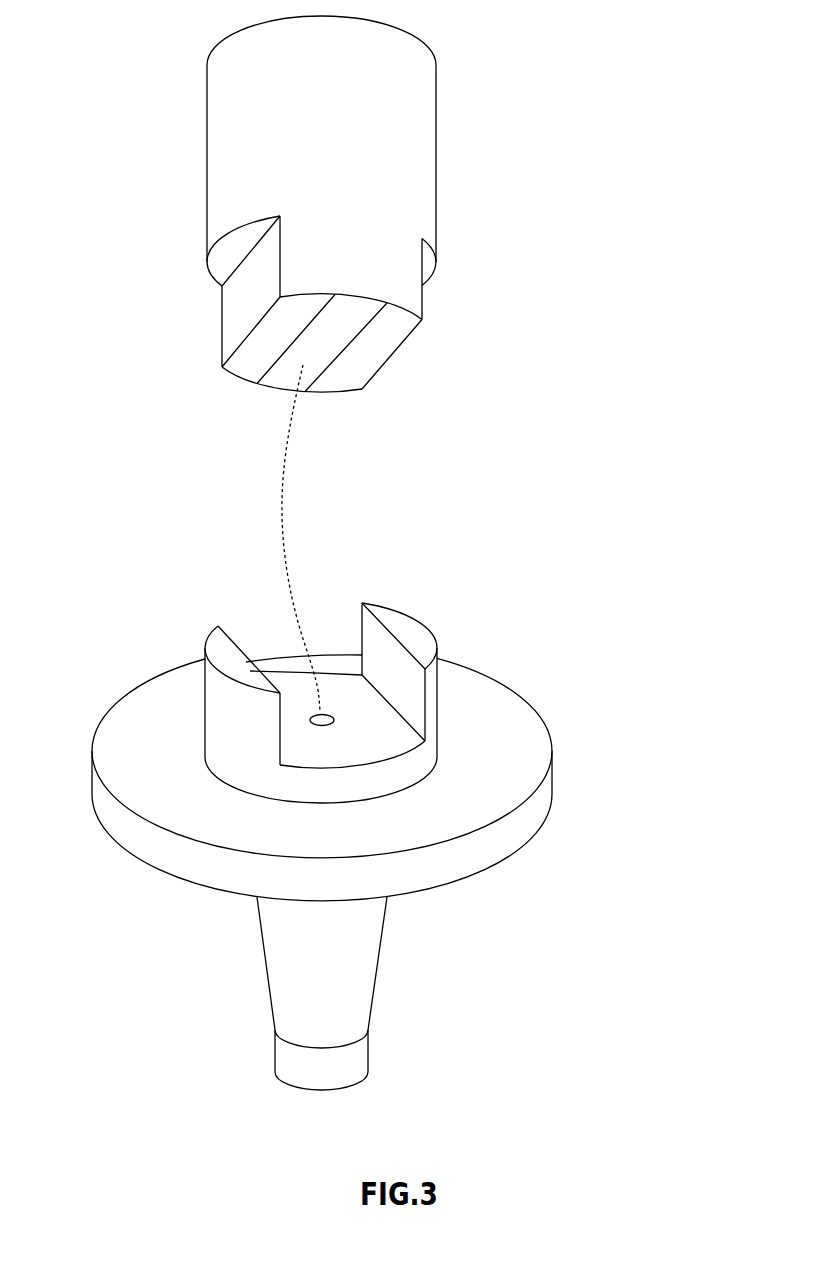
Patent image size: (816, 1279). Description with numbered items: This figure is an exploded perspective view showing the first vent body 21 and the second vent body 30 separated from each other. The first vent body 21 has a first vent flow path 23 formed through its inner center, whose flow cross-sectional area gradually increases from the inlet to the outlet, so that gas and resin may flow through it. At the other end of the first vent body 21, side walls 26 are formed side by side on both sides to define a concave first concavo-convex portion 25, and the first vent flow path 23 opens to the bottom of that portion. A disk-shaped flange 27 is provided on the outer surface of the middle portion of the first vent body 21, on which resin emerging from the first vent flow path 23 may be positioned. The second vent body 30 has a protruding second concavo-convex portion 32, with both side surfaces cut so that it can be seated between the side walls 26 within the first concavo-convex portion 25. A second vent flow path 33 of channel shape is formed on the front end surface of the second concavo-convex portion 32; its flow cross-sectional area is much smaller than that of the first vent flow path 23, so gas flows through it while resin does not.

The first vent body 21 is at (373, 814).
The first vent flow path 23 is at (330, 718).
The first concavo-convex portion 25 is at (293, 690).
The side walls 26 is at (430, 632).
The flange 27 is at (553, 793).
The second vent body 30 is at (390, 227).
The second concavo-convex portion 32 is at (370, 272).
The second vent flow path 33 is at (333, 332).